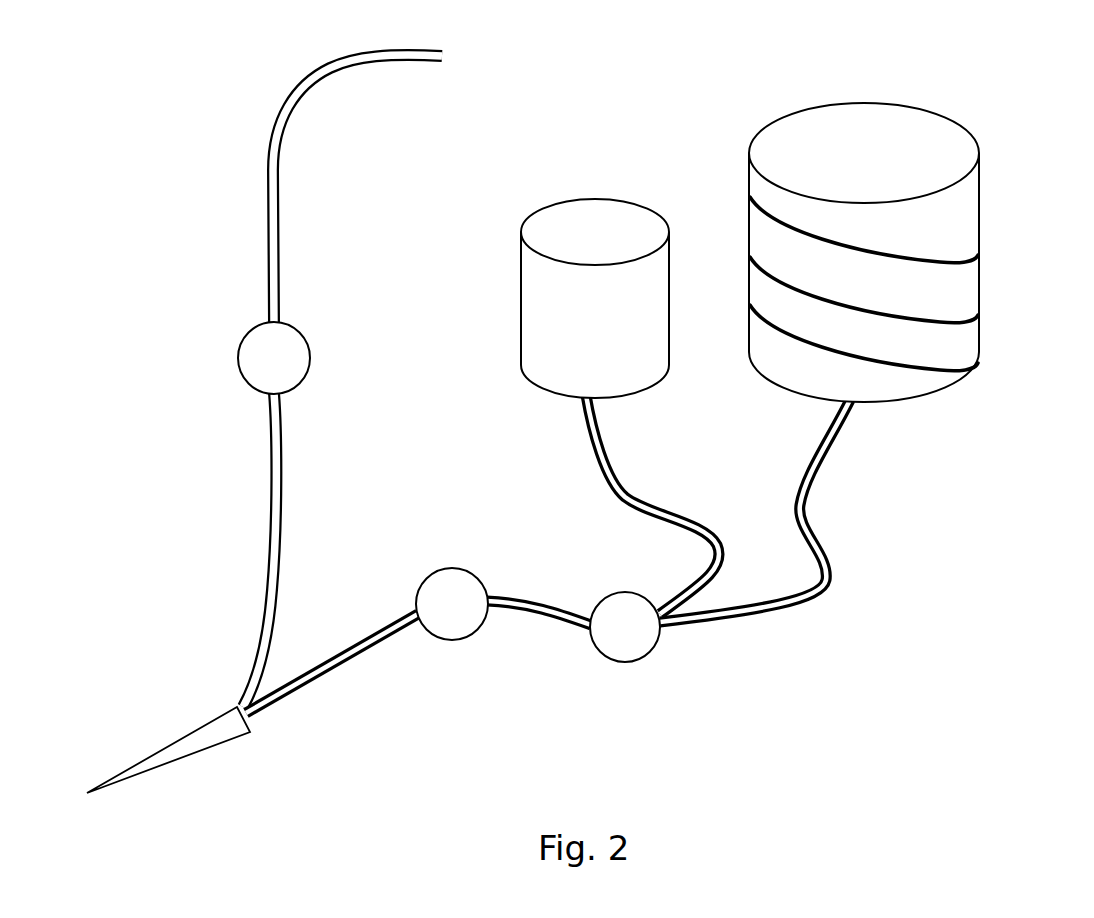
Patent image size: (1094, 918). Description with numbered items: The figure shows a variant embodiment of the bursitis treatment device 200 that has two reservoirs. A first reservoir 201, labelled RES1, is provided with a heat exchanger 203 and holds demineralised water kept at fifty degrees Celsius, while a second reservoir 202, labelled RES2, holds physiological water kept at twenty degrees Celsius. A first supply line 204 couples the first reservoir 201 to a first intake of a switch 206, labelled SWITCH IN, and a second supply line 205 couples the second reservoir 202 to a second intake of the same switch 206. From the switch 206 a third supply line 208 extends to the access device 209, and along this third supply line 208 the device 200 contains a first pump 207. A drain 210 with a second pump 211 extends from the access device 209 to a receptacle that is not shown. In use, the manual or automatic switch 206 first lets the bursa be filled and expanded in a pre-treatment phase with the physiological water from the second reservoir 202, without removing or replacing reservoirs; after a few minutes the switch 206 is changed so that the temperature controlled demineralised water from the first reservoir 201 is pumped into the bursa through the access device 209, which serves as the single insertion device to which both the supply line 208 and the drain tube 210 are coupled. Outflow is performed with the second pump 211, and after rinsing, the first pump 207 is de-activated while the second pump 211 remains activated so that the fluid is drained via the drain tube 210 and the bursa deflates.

The bursitis treatment device 200 is at (579, 403).
The first reservoir 201 is at (980, 265).
The second reservoir 202 is at (521, 291).
The heat exchanger 203 is at (777, 227).
The first supply line 204 is at (803, 505).
The second supply line 205 is at (600, 437).
The switch 206 is at (617, 592).
The first pump 207 is at (440, 567).
The third supply line 208 is at (360, 641).
The access device 209 is at (188, 734).
The drain 210 is at (272, 505).
The second pump 211 is at (238, 358).